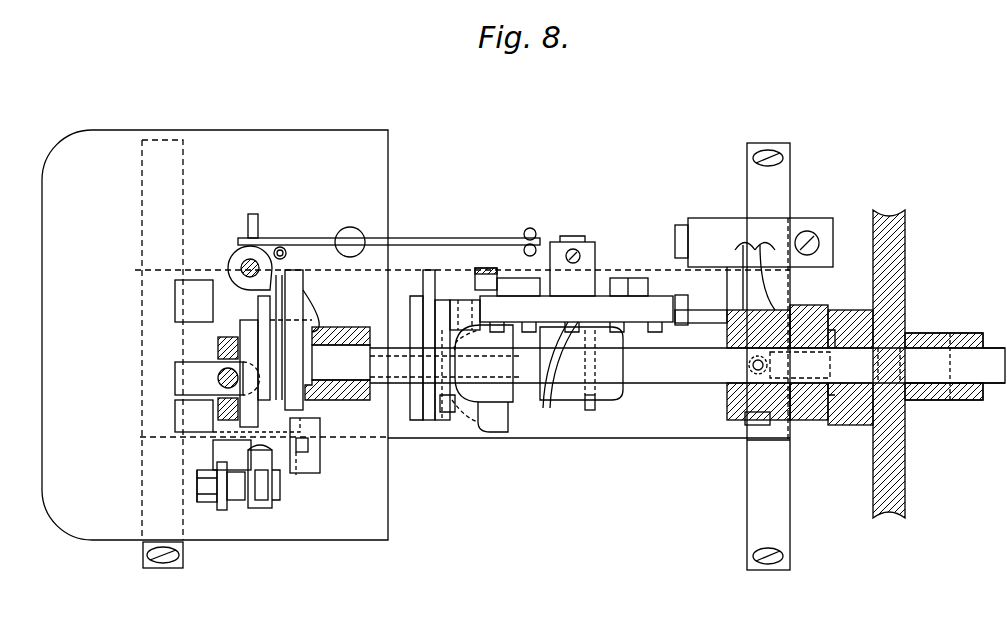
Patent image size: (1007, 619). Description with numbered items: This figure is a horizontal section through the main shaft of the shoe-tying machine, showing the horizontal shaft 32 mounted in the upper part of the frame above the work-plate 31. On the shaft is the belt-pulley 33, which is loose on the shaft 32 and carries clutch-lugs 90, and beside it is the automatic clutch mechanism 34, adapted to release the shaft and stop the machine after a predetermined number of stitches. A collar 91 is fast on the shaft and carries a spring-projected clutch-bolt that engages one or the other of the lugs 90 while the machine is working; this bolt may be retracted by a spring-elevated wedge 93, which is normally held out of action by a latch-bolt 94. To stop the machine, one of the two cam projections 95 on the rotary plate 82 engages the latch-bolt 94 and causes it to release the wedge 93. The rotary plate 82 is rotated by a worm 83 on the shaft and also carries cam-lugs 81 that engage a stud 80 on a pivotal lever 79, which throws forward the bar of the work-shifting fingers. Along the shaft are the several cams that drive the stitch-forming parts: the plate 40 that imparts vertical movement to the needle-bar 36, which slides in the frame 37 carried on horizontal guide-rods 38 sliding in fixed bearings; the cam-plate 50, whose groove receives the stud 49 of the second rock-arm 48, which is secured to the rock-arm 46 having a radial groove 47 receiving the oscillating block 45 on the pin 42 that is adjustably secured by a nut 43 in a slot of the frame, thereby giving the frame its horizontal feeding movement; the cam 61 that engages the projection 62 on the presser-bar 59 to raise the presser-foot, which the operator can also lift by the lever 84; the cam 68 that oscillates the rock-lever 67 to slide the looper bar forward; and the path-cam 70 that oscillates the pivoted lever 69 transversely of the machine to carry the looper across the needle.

The work-plate 31 is at (388, 510).
The horizontal shaft 32 is at (925, 355).
The belt-pulley 33 is at (905, 284).
The automatic clutch mechanism 34 is at (840, 312).
The needle-bar 36 is at (180, 376).
The frame 37 is at (222, 406).
The horizontal guide-rods 38 is at (195, 338).
The plate 40 is at (258, 308).
The pin 42 is at (197, 486).
The nut 43 is at (210, 504).
The oscillating block 45 is at (258, 508).
The rock-arm 46 is at (270, 500).
The radial groove 47 is at (275, 492).
The second rock-arm 48 is at (320, 452).
The stud 49 is at (300, 478).
The cam-plate 50 is at (303, 284).
The presser-bar 59 is at (247, 262).
The cam 61 is at (285, 395).
The projection 62 is at (280, 318).
The rock-lever 67 is at (492, 430).
The cam 68 is at (462, 360).
The pivoted lever 69 is at (420, 300).
The path-cam 70 is at (448, 318).
The pivotal lever 79 is at (486, 268).
The stud 80 is at (492, 288).
The cam-lugs 81 is at (525, 292).
The rotary plate 82 is at (572, 300).
The worm 83 is at (592, 410).
The lever 84 is at (316, 238).
The clutch-lugs 90 is at (845, 308).
The collar 91 is at (812, 422).
The spring-elevated wedge 93 is at (776, 302).
The latch-bolt 94 is at (680, 300).
The cam projections 95 is at (462, 318).